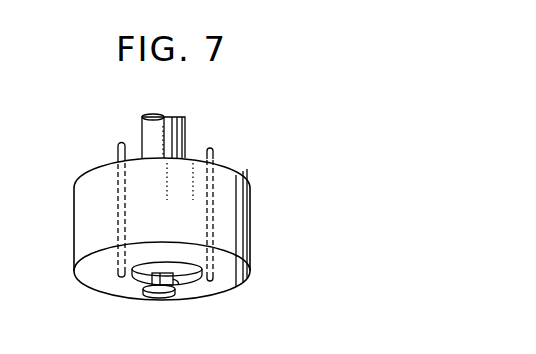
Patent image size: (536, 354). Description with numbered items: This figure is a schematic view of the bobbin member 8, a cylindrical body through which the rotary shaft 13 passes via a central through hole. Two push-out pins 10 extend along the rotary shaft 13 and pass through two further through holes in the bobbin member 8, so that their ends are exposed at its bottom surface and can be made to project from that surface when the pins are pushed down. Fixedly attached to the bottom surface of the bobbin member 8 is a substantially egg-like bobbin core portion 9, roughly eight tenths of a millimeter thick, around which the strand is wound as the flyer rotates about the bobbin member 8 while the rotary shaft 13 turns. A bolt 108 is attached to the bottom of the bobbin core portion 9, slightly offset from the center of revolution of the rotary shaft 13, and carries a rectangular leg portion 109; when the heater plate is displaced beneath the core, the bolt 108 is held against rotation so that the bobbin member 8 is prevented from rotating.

The bobbin member 8 is at (82, 227).
The bobbin core portion 9 is at (143, 275).
The push-out pins 10 is at (214, 154).
The rotary shaft 13 is at (187, 132).
The bolt 108 is at (166, 298).
The rectangular leg portion 109 is at (173, 280).